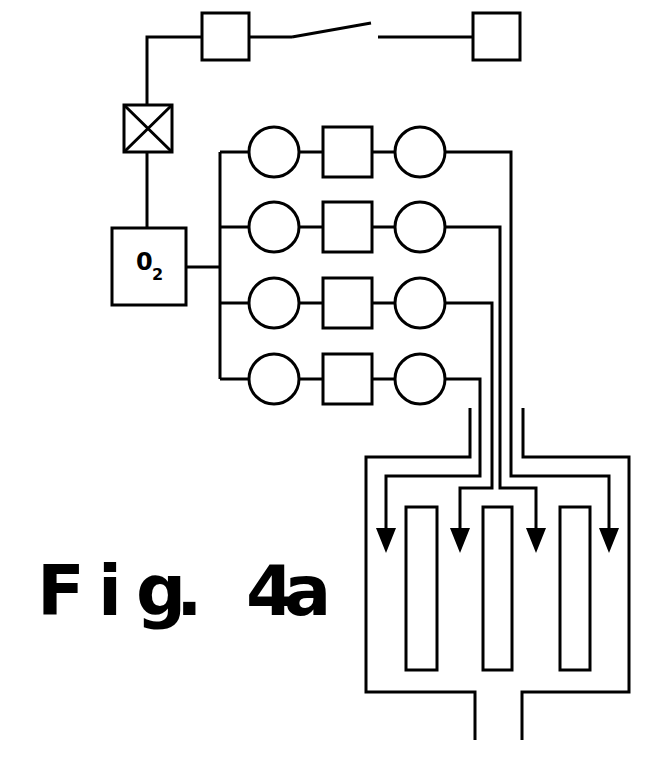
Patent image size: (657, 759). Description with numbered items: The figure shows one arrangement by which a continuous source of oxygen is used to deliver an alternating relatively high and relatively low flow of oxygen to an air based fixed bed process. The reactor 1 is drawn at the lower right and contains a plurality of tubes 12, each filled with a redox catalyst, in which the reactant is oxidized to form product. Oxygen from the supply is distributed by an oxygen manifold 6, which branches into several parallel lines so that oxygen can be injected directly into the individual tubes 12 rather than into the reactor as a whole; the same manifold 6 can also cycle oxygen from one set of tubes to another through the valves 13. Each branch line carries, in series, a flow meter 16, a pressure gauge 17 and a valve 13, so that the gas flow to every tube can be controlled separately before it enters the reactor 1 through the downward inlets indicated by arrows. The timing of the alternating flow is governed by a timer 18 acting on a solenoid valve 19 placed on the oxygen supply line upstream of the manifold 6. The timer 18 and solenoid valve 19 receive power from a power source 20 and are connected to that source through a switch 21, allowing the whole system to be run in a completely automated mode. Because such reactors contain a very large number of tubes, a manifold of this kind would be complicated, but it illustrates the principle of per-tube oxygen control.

The reactor 1 is at (366, 515).
The oxygen manifold 6 is at (220, 342).
The tubes 12 is at (462, 658).
The valves 13 is at (438, 129).
The flow meters 16 is at (272, 126).
The pressure gauges 17 is at (348, 127).
The timer 18 is at (227, 60).
The solenoid valves 19 is at (172, 137).
The power source 20 is at (476, 13).
The switch 21 is at (350, 27).